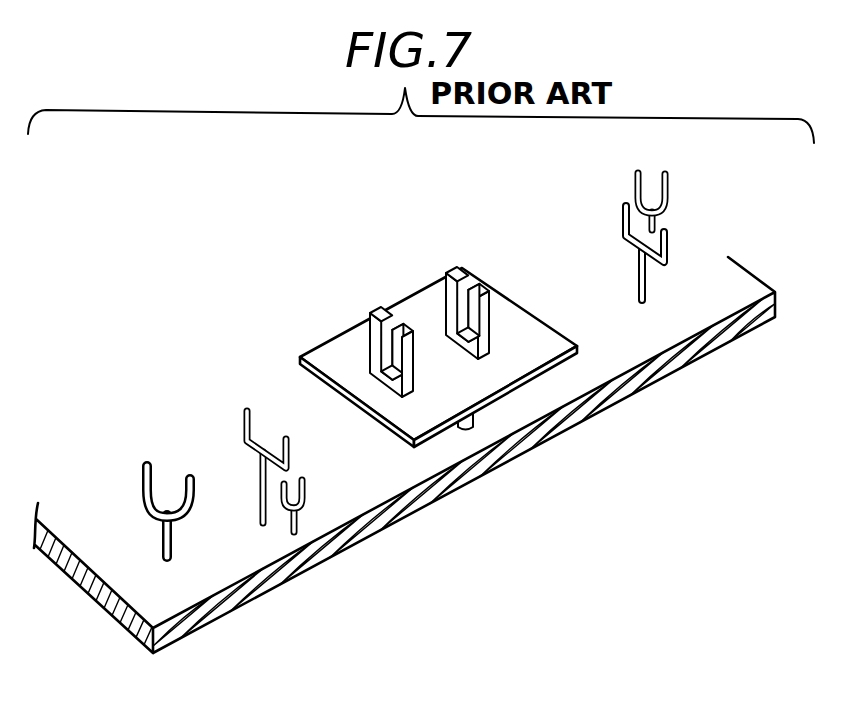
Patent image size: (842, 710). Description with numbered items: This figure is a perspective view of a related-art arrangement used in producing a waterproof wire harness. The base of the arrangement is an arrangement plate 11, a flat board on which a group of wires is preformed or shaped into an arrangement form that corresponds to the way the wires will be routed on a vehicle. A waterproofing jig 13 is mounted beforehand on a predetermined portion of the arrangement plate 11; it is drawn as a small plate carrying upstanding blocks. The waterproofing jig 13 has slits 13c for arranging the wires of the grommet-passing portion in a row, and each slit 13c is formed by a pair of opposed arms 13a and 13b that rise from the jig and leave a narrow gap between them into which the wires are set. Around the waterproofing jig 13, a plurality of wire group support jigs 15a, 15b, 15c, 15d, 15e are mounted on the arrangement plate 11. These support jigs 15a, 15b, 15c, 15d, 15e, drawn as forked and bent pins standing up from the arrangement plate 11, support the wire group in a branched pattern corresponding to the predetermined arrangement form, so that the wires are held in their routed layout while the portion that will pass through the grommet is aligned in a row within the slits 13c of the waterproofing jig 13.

The arrangement plate 11 is at (427, 507).
The waterproofing jig 13 is at (427, 303).
The arm 13a is at (368, 342).
The arm 13b is at (417, 370).
The slit 13c is at (370, 332).
The wire group support jig 15a is at (143, 476).
The wire group support jig 15b is at (243, 424).
The wire group support jig 15c is at (308, 492).
The wire group support jig 15d is at (670, 248).
The wire group support jig 15e is at (668, 192).